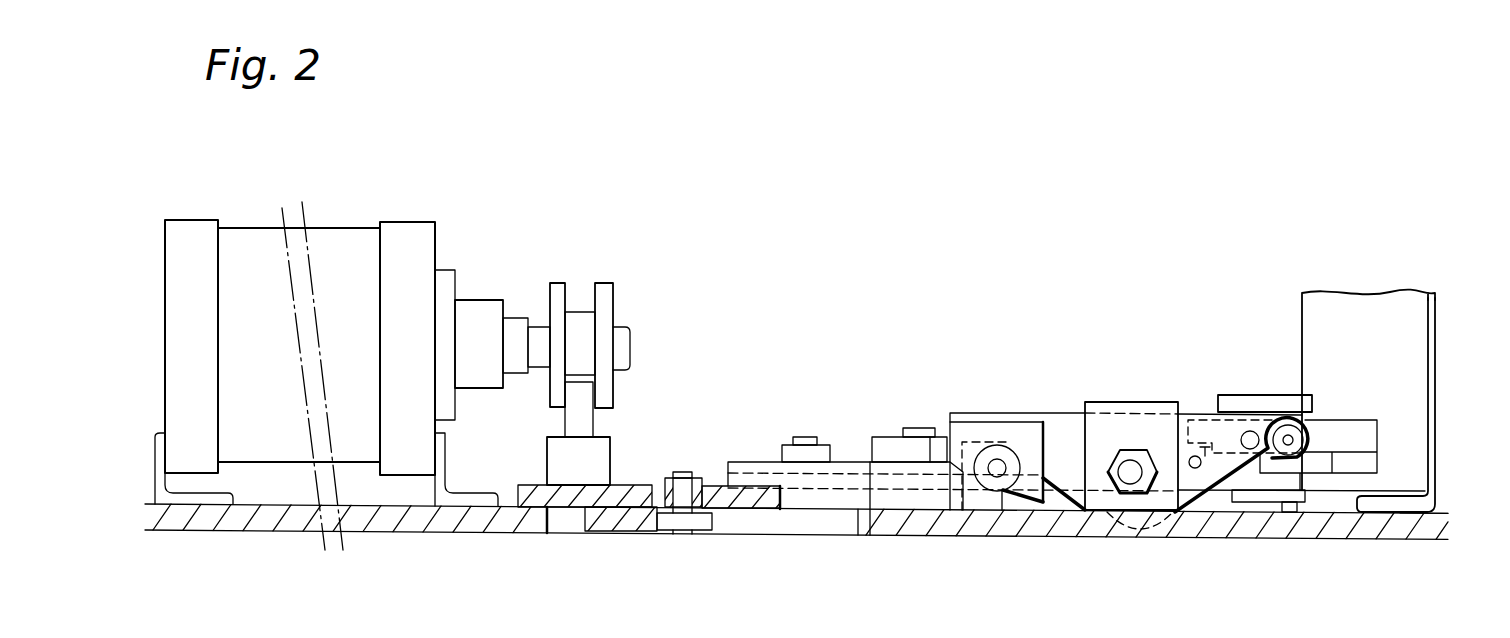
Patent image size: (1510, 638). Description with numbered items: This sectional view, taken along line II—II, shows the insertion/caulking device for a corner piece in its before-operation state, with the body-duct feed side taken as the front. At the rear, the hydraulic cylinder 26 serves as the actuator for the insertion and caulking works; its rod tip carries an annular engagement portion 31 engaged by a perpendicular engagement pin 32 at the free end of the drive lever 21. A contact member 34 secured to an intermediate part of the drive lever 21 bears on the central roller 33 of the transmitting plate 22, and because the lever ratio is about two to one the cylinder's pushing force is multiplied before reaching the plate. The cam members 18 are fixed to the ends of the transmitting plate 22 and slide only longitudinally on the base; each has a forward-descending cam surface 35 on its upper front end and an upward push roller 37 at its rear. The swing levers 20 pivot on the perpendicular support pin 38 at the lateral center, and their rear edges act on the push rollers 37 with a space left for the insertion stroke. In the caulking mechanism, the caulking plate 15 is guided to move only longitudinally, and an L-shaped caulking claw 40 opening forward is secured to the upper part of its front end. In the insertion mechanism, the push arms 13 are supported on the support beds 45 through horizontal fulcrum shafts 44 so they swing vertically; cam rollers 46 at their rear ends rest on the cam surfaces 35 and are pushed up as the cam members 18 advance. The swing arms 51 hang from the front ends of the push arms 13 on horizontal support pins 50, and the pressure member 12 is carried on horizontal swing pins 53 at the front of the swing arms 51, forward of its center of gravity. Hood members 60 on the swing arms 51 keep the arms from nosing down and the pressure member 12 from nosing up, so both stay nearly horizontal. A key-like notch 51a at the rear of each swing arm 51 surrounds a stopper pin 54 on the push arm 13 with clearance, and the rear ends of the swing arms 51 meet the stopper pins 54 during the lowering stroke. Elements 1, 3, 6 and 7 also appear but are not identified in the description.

The housing wall 1 is at (1437, 400).
The base plate 3 is at (1415, 530).
The bottom flange 6 is at (1370, 503).
The channel flange 7 is at (1432, 502).
The pressure member 12 is at (1352, 475).
The push arms 13 is at (1060, 422).
The caulking plate 15 is at (1197, 470).
The cam members 18 is at (889, 500).
The swing levers 20 is at (870, 458).
The drive lever 21 is at (535, 495).
The transmitting plate 22 is at (758, 498).
The hydraulic cylinder 26 is at (335, 240).
The annular engagement portion 31 is at (570, 303).
The engagement pin 32 is at (575, 416).
The central roller 33 is at (697, 520).
The contact member 34 is at (635, 518).
The cam surface 35 is at (971, 480).
The push rollers 37 is at (786, 455).
The support pin 38 is at (915, 426).
The caulking claw 40 is at (1290, 514).
The horizontal fulcrum shafts 44 is at (1122, 490).
The support beds 45 is at (1112, 402).
The cam rollers 46 is at (1010, 491).
The horizontal support pins 50 is at (1250, 431).
The swing arms 51 is at (1275, 425).
The key-like notch 51a is at (1208, 462).
The horizontal swing pins 53 is at (1302, 438).
The stopper pins 54 is at (1178, 530).
The hood members 60 is at (1228, 395).